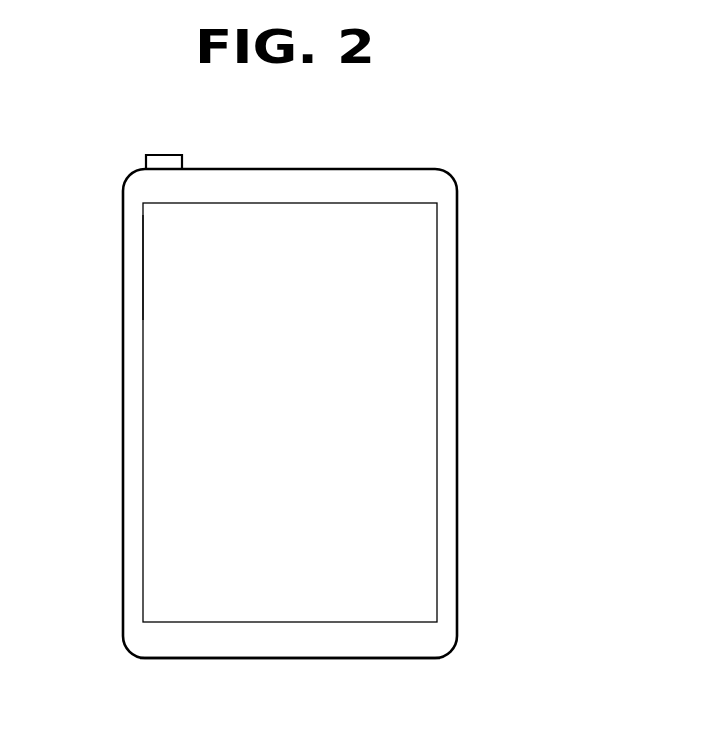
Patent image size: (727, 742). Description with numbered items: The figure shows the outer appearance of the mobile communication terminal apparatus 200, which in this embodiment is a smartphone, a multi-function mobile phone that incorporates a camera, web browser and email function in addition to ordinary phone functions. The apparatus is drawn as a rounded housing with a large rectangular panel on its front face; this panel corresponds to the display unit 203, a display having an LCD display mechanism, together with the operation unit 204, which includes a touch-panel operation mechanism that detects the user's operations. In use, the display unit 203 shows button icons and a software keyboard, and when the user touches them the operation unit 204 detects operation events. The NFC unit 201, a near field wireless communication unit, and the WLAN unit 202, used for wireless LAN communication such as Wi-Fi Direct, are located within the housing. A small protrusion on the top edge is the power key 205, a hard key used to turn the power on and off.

The mobile communication terminal apparatus 200 is at (487, 153).
The NFC unit 201 is at (302, 640).
The WLAN unit 202 is at (408, 168).
The display unit 203 is at (142, 250).
The operation unit 204 is at (420, 482).
The power key 205 is at (161, 154).